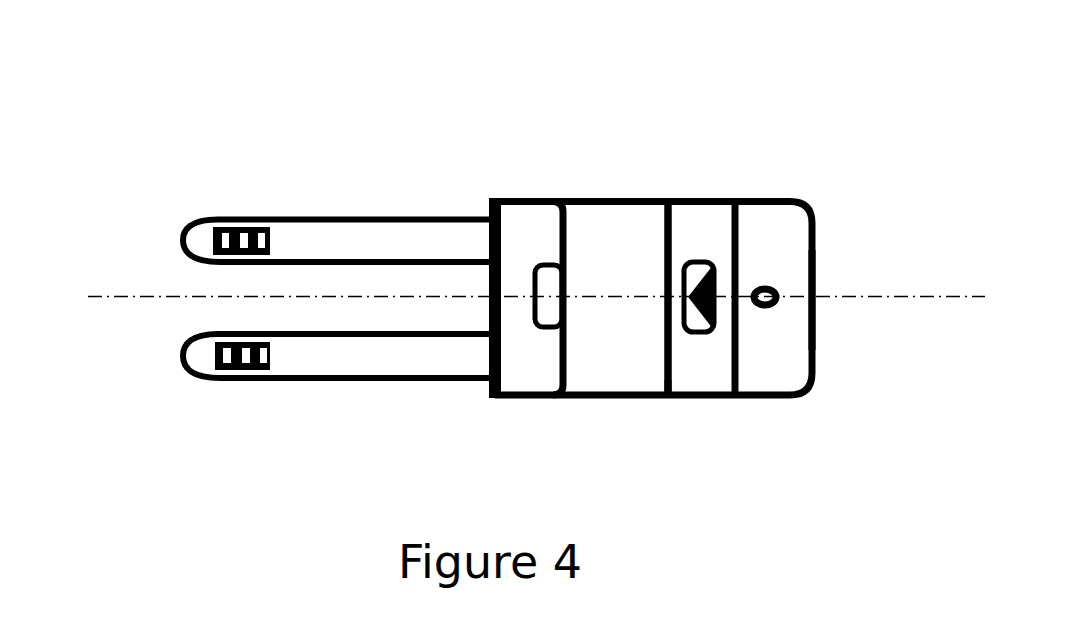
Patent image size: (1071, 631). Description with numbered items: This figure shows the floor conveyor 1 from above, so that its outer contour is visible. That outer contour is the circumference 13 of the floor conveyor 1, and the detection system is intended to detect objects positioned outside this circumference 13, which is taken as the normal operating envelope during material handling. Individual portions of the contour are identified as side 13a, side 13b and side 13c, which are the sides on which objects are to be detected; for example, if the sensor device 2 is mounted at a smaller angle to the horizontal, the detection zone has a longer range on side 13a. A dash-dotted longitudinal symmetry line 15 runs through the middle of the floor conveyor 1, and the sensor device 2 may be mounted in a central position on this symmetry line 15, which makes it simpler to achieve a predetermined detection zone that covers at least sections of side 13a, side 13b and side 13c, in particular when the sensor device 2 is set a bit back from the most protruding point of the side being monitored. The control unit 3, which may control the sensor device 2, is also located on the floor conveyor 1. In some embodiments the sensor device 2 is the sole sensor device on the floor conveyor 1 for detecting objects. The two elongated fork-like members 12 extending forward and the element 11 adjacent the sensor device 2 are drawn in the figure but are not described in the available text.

The floor conveyor 1 is at (305, 68).
The sensor device 2 is at (763, 287).
The control unit 3 is at (709, 262).
The actuating element 11 is at (690, 264).
The fork arm 12 is at (330, 248).
The circumference 13 is at (183, 238).
The side 13a is at (820, 278).
The side 13b is at (678, 197).
The side 13c is at (683, 400).
The longitudinal symmetry line 15 is at (165, 298).